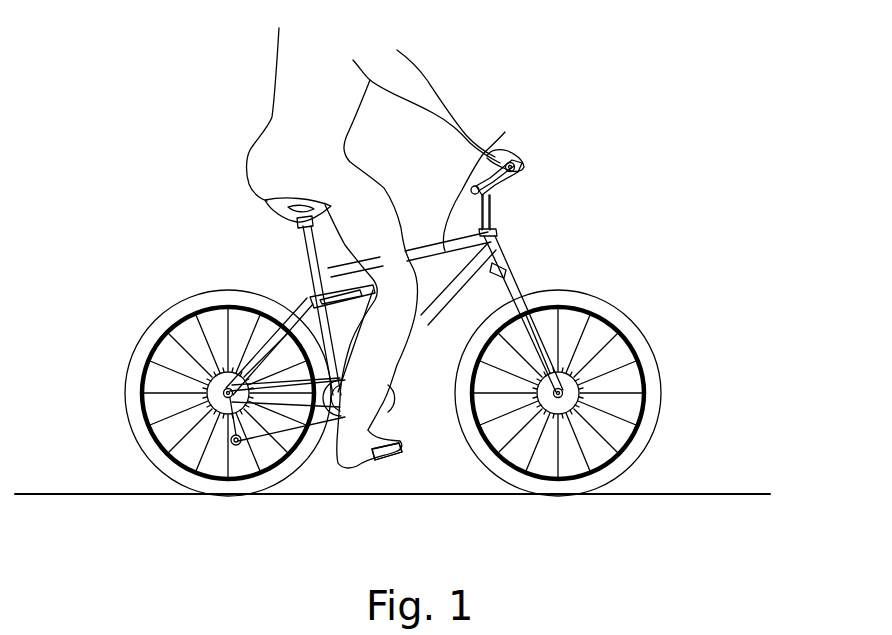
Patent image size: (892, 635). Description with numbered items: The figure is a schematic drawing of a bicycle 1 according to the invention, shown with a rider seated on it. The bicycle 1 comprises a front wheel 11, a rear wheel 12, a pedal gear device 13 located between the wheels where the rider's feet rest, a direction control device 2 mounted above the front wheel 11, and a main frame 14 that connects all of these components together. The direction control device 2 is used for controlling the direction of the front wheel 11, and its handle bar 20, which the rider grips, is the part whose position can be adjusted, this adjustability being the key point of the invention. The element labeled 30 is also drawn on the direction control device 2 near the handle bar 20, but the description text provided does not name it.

The bicycle 1 is at (688, 183).
The direction control device 2 is at (537, 189).
The front wheel 11 is at (630, 335).
The rear wheel 12 is at (202, 312).
The pedal gear device 13 is at (398, 413).
The main frame 14 is at (478, 132).
The handle bar 20 is at (518, 160).
The stem 30 is at (490, 212).